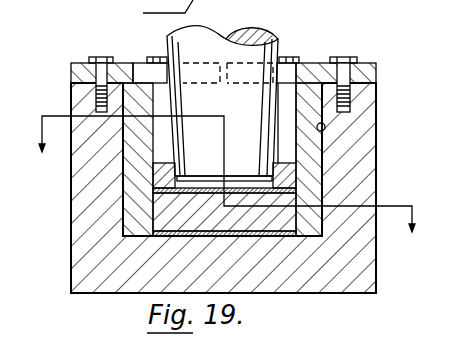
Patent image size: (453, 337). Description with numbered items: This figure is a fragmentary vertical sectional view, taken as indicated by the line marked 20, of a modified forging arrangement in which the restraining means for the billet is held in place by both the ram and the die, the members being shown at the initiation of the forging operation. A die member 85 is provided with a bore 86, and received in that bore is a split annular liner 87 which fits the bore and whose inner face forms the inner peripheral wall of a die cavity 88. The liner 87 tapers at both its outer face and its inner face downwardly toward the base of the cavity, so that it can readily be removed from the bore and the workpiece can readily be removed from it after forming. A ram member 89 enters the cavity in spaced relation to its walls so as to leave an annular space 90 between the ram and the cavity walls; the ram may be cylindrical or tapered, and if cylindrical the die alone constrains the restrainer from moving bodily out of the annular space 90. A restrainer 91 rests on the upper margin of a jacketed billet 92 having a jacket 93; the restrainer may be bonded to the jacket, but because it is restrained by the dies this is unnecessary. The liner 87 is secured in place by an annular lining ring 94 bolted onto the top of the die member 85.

The die member 85 is at (376, 153).
The bore 86 is at (325, 124).
The split annular liner 87 is at (123, 166).
The die cavity 88 is at (295, 96).
The ram member 89 is at (187, 50).
The annular space 90 is at (283, 110).
The restrainer 91 is at (155, 180).
The jacketed billet 92 is at (163, 236).
The jacket 93 is at (281, 237).
The annular lining ring 94 is at (80, 63).
The section line 20- 20 is at (232, 188).